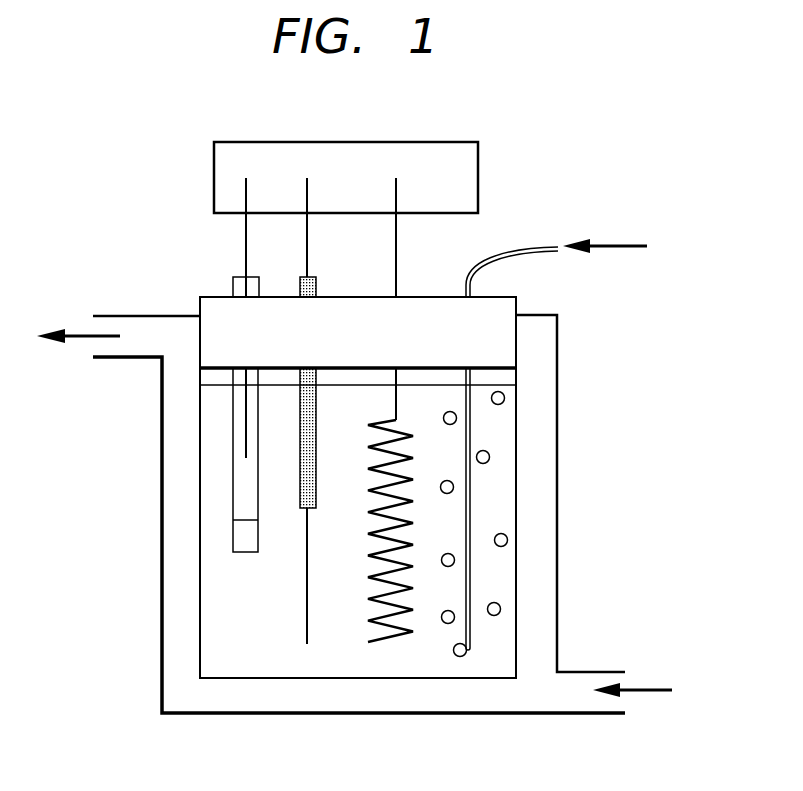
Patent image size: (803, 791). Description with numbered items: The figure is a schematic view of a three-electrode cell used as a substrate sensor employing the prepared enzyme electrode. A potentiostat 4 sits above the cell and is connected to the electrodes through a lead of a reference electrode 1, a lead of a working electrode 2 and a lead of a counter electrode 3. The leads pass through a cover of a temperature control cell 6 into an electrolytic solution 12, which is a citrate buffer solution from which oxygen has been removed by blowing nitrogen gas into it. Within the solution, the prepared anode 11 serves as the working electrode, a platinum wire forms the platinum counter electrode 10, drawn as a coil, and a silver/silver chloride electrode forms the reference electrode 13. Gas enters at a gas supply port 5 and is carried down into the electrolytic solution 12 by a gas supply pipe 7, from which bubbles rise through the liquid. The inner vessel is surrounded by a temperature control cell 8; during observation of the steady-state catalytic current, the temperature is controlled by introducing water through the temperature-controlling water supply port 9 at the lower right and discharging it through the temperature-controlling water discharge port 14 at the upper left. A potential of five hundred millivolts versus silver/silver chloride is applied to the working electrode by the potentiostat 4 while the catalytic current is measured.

The lead of a reference electrode 1 is at (250, 190).
The lead of a working electrode 2 is at (310, 190).
The lead of a counter electrode 3 is at (398, 190).
The potentiostat 4 is at (465, 163).
The gas supply port 5 is at (545, 247).
The cover of a temperature control cell 6 is at (497, 349).
The gas supply pipe 7 is at (470, 502).
The temperature control cell 8 is at (535, 608).
The temperature-controlling water supply port 9 is at (585, 678).
The platinum counter electrode 10 is at (395, 637).
The anode 11 is at (308, 630).
The electrolytic solution 12 is at (230, 655).
The reference electrode 13 is at (243, 494).
The temperature-controlling water discharge port 14 is at (137, 327).